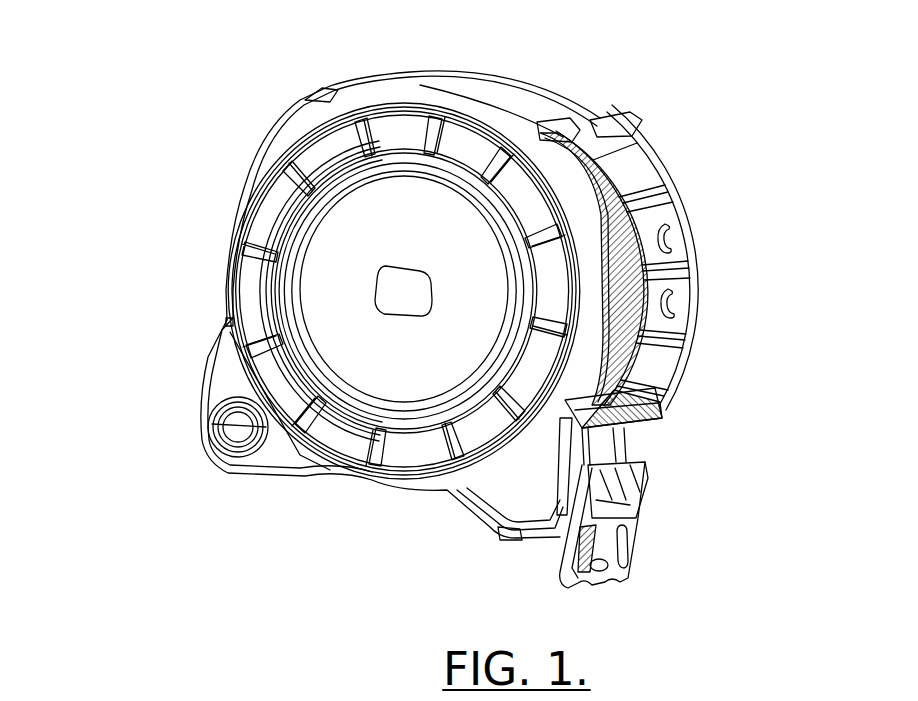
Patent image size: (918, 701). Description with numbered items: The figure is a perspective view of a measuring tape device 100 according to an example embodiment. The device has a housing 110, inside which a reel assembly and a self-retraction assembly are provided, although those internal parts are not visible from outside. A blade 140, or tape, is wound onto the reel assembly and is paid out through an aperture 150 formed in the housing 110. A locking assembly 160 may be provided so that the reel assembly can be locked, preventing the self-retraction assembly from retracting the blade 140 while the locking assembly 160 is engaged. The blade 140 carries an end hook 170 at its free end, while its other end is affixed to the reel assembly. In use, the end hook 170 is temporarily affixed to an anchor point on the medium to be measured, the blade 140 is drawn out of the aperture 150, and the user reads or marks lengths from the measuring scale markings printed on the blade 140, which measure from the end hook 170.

The measuring tape device 100 is at (447, 319).
The housing 110 is at (400, 72).
The blade 140 is at (612, 485).
The aperture 150 is at (568, 484).
The locking assembly 160 is at (712, 214).
The end hook 170 is at (628, 580).